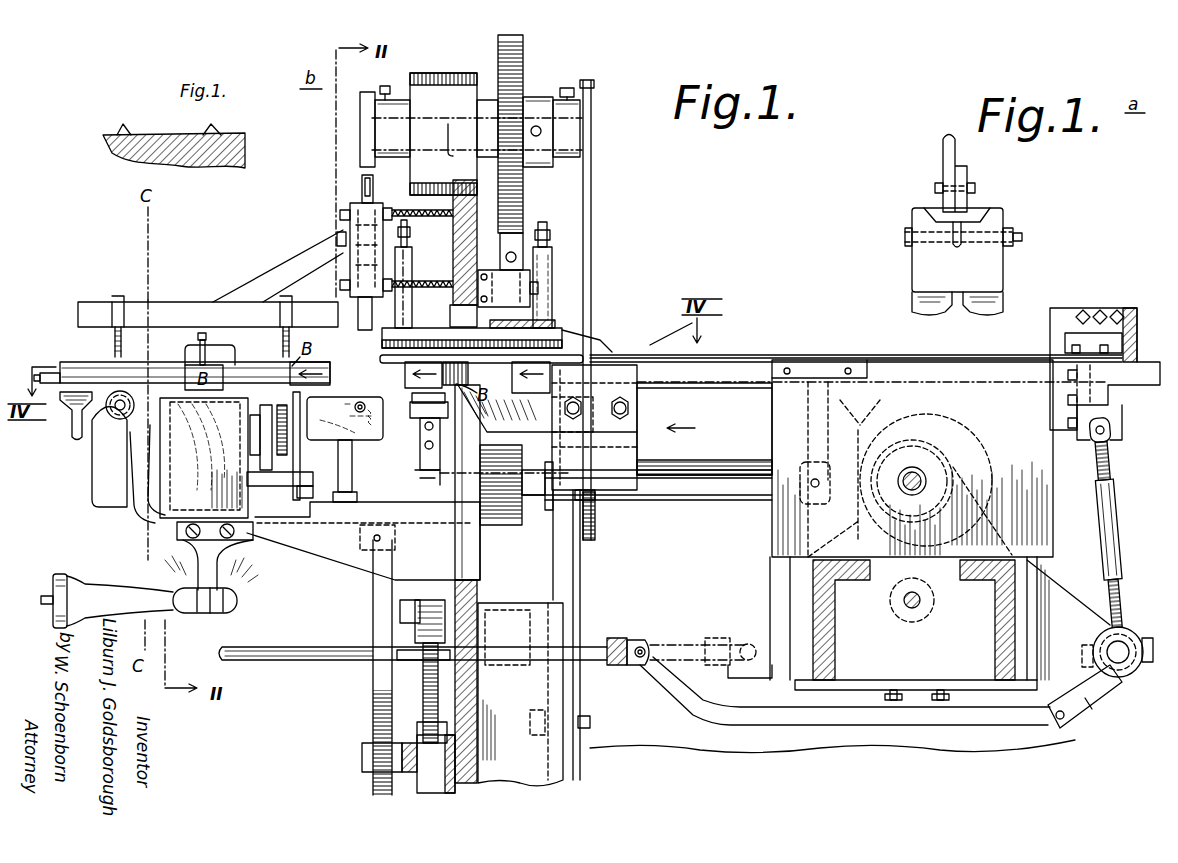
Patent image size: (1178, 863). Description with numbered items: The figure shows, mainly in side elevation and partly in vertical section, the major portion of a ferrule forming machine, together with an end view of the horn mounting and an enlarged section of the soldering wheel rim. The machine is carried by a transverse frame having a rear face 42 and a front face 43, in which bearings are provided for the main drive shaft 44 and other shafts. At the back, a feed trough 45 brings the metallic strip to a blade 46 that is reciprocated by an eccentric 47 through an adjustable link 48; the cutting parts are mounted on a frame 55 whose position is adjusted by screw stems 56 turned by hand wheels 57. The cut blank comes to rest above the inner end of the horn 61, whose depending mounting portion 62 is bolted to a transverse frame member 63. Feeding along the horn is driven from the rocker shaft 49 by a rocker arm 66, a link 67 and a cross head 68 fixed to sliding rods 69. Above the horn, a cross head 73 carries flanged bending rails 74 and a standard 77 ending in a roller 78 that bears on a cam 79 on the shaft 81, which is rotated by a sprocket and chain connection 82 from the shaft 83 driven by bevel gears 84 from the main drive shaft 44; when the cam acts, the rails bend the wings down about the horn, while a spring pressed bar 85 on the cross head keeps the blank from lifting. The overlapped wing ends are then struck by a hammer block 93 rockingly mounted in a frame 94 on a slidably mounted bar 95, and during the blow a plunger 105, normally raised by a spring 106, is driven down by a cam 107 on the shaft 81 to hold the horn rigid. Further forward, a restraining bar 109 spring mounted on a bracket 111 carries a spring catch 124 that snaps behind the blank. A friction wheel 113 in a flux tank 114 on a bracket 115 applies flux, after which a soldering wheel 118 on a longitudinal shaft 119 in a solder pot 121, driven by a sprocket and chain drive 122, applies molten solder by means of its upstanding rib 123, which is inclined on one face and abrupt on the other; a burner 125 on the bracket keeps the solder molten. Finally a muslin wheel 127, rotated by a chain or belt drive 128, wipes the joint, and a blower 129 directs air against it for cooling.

In FIG. 1, the rear face 42 is at (453, 248).
In FIG. 1, the front face 43 is at (482, 706).
In FIG. 1, the main drive shaft 44 is at (913, 470).
In FIG. 1, the feed trough 45 is at (1137, 343).
In FIG. 1, the blade 46 is at (1100, 340).
In FIG. 1, the eccentric 47 is at (1130, 640).
In FIG. 1, the adjustable link 48 is at (1110, 466).
In FIG. 1, the rocker shaft 49 is at (1120, 662).
In FIG. 1, the frame 55 is at (911, 530).
In FIG. 1, the screw stems 56 is at (904, 600).
In FIG. 1, the hand wheels 57 is at (935, 613).
In FIG. 1A, the horn 61 is at (943, 148).
In FIG. 1, the horn 61 is at (97, 371).
In FIG. 1A, the depending mounting portion 62 is at (935, 189).
In FIG. 1, the depending mounting portion 62 is at (578, 482).
In FIG. 1A, the transverse frame member 63 is at (920, 308).
In FIG. 1, the transverse frame member 63 is at (582, 578).
In FIG. 1, the rocker arm 66 is at (1085, 696).
In FIG. 1, the link 67 is at (861, 715).
In FIG. 1, the cross head 68 is at (617, 638).
In FIG. 1, the sliding rods 69 is at (305, 647).
In FIG. 1, the cross head 73 is at (437, 333).
In FIG. 1, the flanged bending rails 74 is at (382, 340).
In FIG. 1, the standard 77 is at (510, 264).
In FIG. 1, the roller 78 is at (520, 232).
In FIG. 1, the cam 79 is at (512, 82).
In FIG. 1, the shaft 81 is at (565, 133).
In FIG. 1, the sprocket and chain connection 82 is at (592, 208).
In FIG. 1, the shaft 83 is at (698, 500).
In FIG. 1, the bevel gears 84 is at (856, 418).
In FIG. 1, the spring pressed bar 85 is at (590, 348).
In FIG. 1, the hammer block 93 is at (412, 396).
In FIG. 1, the frame 94 is at (412, 415).
In FIG. 1, the slidably mounted bar 95 is at (420, 458).
In FIG. 1, the plunger 105 is at (358, 199).
In FIG. 1, the spring 106 is at (348, 278).
In FIG. 1, the cam 107 is at (360, 130).
In FIG. 1, the restraining bar 109 is at (72, 364).
In FIG. 1, the bracket 111 is at (178, 305).
In FIG. 1, the friction wheel 113 is at (345, 418).
In FIG. 1, the flux tank 114 is at (338, 441).
In FIG. 1, the bracket 115 is at (322, 546).
In FIG. 1B, the soldering wheel 118 is at (184, 166).
In FIG. 1, the soldering wheel 118 is at (204, 458).
In FIG. 1, the longitudinal shaft 119 is at (211, 491).
In FIG. 1, the solder pot 121 is at (252, 508).
In FIG. 1, the sprocket and chain drive 122 is at (280, 407).
In FIG. 1B, the rib 123 is at (124, 130).
In FIG. 1, the spring catch 124 is at (236, 352).
In FIG. 1, the burner 125 is at (238, 601).
In FIG. 1, the muslin wheel 127 is at (117, 421).
In FIG. 1, the chain or belt drive 128 is at (135, 552).
In FIG. 1, the blower 129 is at (75, 416).